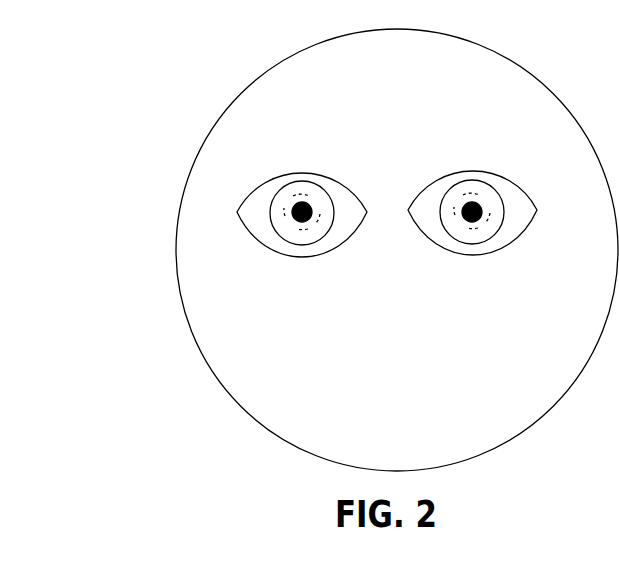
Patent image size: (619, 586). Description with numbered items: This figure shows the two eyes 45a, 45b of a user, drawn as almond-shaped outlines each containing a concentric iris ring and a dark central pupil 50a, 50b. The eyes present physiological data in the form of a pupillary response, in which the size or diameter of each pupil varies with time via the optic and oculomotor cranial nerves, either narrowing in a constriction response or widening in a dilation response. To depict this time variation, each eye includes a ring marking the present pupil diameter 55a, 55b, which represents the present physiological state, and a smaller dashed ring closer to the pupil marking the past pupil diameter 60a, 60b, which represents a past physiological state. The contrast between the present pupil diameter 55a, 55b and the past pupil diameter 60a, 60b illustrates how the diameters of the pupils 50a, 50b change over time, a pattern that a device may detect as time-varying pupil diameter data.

The eye 45a is at (268, 182).
The present pupil diameter 55a is at (302, 196).
The pupil 50a is at (322, 208).
The past pupil diameter 60a is at (290, 225).
The eye 45b is at (442, 181).
The present pupil diameter 55b is at (470, 200).
The pupil 50b is at (497, 203).
The past pupil diameter 60b is at (458, 226).